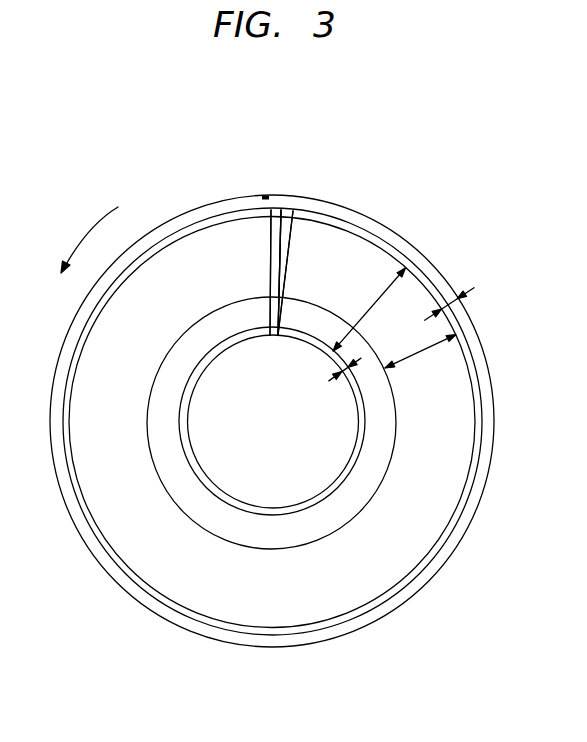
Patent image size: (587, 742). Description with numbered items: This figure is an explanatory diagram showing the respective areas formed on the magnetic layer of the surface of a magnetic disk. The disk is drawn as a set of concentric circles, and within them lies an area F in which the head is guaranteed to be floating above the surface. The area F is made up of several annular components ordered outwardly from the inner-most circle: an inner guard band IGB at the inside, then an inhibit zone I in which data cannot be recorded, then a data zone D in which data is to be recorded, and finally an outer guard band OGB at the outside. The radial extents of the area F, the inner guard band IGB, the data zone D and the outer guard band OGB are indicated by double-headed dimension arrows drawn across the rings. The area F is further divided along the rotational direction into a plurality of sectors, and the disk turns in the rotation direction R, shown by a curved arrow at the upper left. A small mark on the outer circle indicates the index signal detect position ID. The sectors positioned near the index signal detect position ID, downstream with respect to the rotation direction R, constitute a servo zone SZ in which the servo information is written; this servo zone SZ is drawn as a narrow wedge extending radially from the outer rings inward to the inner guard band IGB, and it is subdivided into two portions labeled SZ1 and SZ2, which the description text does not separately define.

The rotation direction R is at (75, 245).
The index signal detect position ID is at (265, 193).
The servo zone SZ is at (293, 212).
The first servo zone portion SZ1 is at (271, 245).
The second servo zone portion SZ2 is at (285, 260).
The inhibit zone I is at (372, 216).
The area in which the head is guaranteed to be floating F is at (388, 285).
The outer guard band OGB is at (448, 295).
The data zone D is at (431, 343).
The inner guard band IGB is at (341, 384).